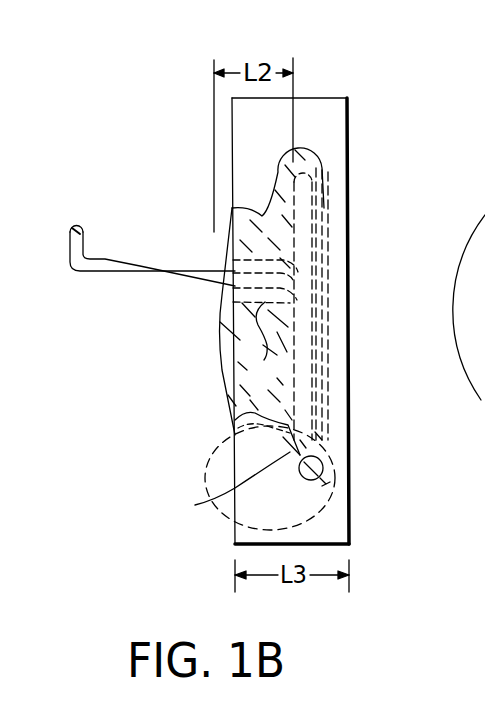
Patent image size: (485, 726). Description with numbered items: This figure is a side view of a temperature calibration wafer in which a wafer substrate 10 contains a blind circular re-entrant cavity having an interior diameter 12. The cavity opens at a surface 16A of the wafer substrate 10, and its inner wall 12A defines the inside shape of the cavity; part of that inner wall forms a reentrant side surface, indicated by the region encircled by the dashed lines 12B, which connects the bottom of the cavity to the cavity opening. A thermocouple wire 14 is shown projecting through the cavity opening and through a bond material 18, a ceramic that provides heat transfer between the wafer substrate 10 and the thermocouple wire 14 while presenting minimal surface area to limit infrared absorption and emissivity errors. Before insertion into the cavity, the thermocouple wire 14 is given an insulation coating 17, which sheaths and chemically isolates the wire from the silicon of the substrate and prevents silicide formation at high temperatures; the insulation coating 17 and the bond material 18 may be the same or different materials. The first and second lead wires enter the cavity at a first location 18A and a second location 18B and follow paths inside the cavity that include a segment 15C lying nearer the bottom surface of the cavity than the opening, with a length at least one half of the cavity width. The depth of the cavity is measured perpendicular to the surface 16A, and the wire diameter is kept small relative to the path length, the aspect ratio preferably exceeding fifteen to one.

The wafer substrate 10 is at (290, 321).
The interior diameter 12 is at (312, 483).
The inner wall 12A is at (232, 493).
The reentrant side surface region 12B is at (210, 454).
The thermocouple wire 14 is at (152, 287).
The segment 15C is at (312, 218).
The surface 16A is at (232, 133).
The insulation coating 17 is at (271, 299).
The bond material 18 is at (221, 262).
The first location 18A is at (220, 267).
The second location 18B is at (216, 292).